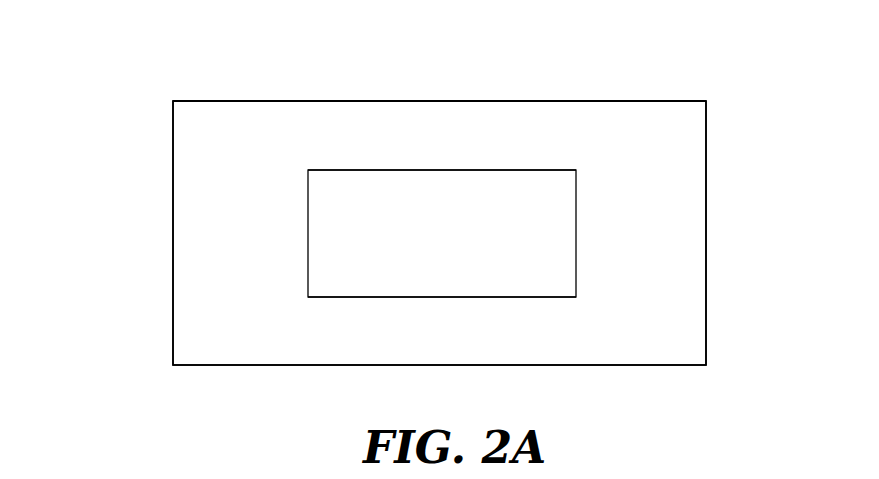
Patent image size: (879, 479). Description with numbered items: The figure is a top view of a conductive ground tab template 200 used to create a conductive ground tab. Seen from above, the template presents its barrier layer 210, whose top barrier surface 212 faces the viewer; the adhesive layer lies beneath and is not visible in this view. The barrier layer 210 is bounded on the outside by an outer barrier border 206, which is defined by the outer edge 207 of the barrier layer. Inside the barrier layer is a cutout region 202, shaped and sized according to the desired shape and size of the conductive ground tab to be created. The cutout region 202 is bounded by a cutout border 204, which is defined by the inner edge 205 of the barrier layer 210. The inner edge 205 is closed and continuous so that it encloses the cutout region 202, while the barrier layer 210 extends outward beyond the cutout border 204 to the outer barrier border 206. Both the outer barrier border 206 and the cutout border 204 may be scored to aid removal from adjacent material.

The conductive ground tab template 200 is at (155, 57).
The cutout region 202 is at (372, 248).
The cutout border 204 is at (537, 172).
The inner edge 205 is at (537, 297).
The outer barrier border 206 is at (387, 100).
The outer edge 207 is at (553, 100).
The barrier layer 210 is at (673, 160).
The top barrier surface 212 is at (657, 256).